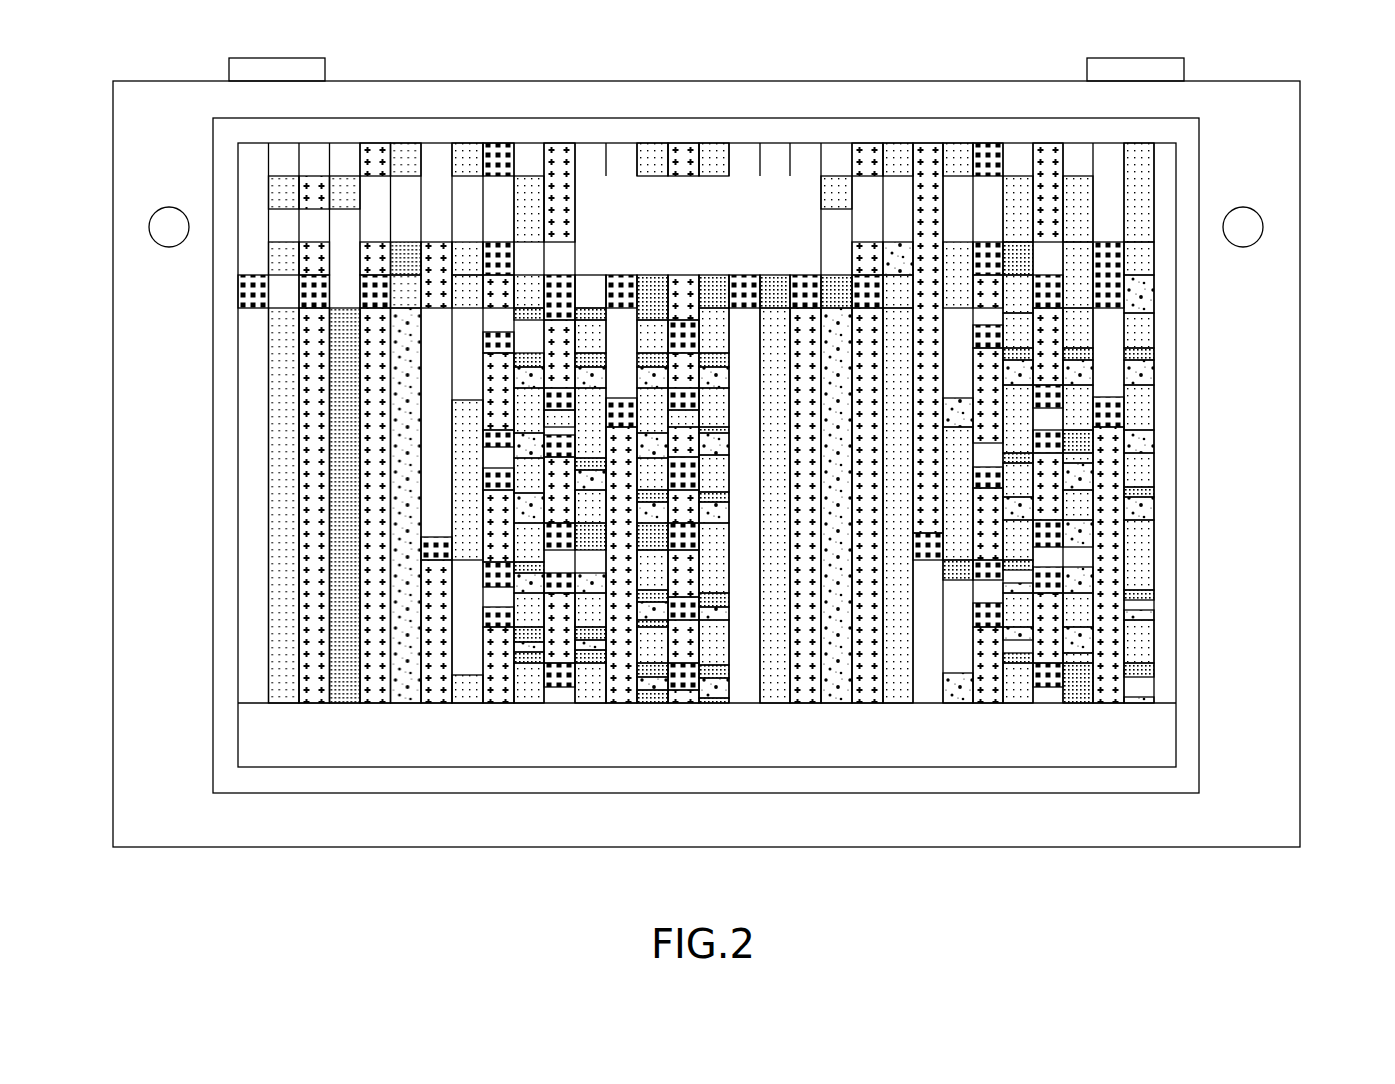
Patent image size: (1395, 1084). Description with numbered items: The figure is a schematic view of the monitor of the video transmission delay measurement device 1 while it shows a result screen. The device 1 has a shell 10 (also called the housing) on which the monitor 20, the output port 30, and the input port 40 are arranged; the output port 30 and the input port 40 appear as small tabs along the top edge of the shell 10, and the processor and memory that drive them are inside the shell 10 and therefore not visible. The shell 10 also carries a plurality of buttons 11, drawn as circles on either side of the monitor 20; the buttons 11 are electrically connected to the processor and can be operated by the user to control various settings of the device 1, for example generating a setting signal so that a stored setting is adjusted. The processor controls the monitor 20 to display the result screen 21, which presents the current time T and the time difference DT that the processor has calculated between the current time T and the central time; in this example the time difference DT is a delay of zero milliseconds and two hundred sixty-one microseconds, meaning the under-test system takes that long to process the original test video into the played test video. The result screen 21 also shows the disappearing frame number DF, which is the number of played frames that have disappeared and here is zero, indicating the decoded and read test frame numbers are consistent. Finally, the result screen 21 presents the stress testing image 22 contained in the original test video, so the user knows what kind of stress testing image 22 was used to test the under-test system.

The video transmission delay measurement device 1 is at (1318, 112).
The shell 10 is at (1300, 357).
The buttons 11 is at (156, 213).
The monitor 20 is at (1177, 640).
The result screen 21 is at (237, 483).
The stress testing image 22 is at (280, 635).
The output port 30 is at (1087, 78).
The input port 40 is at (229, 78).
The time difference DT is at (583, 247).
The current time T is at (621, 173).
The disappearing frame number DF is at (783, 193).